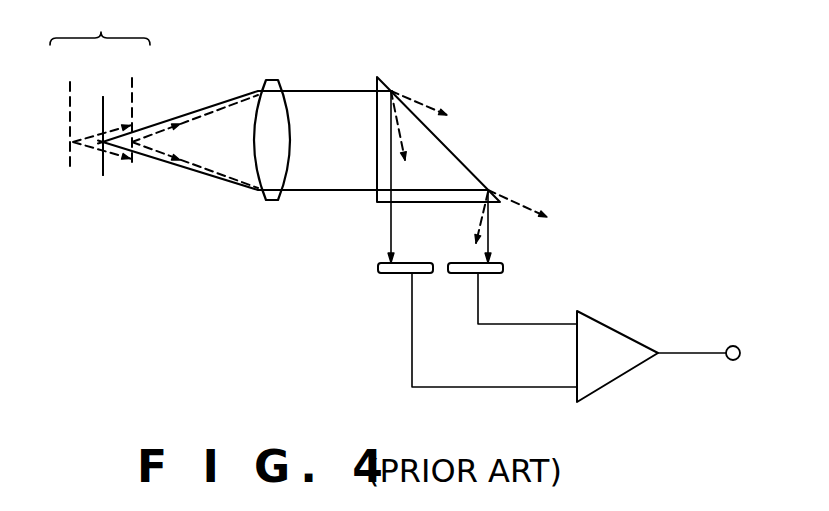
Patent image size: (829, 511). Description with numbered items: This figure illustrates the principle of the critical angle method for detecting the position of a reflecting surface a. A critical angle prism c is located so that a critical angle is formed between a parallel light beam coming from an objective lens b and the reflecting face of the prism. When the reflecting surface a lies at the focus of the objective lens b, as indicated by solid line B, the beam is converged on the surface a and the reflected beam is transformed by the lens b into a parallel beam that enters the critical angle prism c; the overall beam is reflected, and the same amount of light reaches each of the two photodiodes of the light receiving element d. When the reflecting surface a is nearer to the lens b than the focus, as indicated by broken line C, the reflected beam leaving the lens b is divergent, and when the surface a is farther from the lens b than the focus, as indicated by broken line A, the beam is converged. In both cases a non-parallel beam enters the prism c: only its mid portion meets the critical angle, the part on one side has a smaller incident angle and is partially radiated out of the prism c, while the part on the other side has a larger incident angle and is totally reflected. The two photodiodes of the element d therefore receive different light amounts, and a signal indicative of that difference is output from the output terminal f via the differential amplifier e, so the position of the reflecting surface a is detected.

The broken line A is at (72, 106).
The solid line B is at (102, 110).
The broken line C is at (133, 106).
The reflecting surface a is at (103, 175).
The objective lens b is at (272, 80).
The critical angle prism c is at (385, 80).
The light receiving element d is at (505, 268).
The differential amplifier e is at (617, 383).
The output terminal f is at (733, 360).